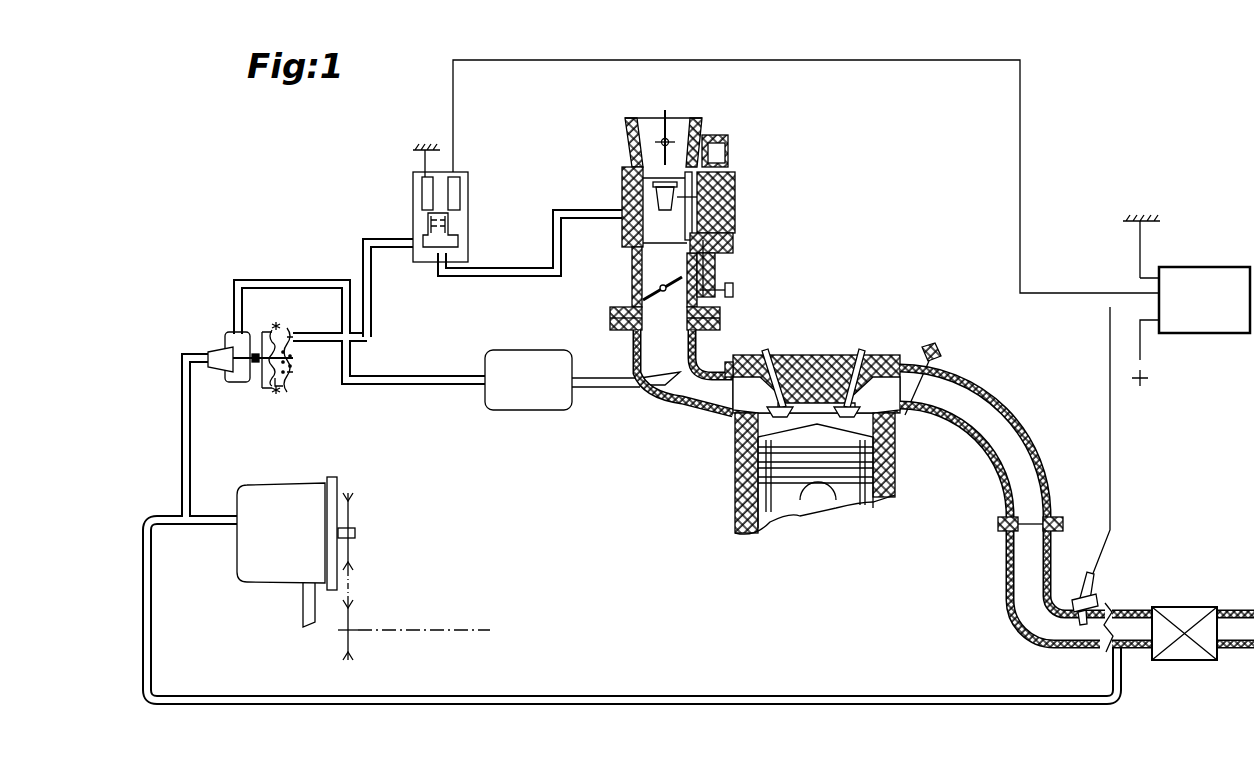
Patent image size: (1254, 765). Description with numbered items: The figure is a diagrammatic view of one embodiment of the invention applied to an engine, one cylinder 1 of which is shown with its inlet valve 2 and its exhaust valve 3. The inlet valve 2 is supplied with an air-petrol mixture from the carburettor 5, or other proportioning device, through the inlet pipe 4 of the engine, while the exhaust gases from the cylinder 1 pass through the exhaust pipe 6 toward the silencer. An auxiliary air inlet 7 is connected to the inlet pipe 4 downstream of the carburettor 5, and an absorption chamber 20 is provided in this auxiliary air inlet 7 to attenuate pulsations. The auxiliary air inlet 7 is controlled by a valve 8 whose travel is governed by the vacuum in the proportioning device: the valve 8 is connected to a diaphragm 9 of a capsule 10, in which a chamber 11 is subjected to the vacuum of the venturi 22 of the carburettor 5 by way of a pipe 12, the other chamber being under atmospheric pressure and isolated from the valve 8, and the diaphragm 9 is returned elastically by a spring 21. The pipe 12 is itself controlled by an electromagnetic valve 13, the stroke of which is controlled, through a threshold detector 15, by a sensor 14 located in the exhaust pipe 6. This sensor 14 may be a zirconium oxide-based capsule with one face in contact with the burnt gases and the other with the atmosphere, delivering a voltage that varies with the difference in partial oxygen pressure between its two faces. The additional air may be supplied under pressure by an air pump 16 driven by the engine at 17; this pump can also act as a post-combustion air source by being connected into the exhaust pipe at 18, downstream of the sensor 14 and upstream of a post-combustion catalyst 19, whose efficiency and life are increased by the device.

The cylinder 1 is at (897, 485).
The inlet valve 2 is at (770, 350).
The exhaust valve 3 is at (858, 350).
The inlet pipe 4 is at (687, 403).
The carburettor 5 is at (623, 262).
The exhaust pipe 6 is at (1015, 410).
The auxiliary air inlet 7 is at (607, 383).
The valve 8 is at (220, 350).
The diaphragm 9 is at (287, 380).
The capsule 10 is at (295, 367).
The chamber 11 is at (285, 387).
The pipe 12 is at (373, 307).
The electromagnetic valve 13 is at (470, 197).
The sensor 14 is at (1097, 592).
The threshold detector 15 is at (1227, 333).
The air pump 16 is at (277, 570).
The engine drive 17 is at (463, 630).
The exhaust pipe connection 18 is at (1137, 653).
The post-combustion catalyst 19 is at (1203, 607).
The absorption chamber 20 is at (527, 402).
The spring 21 is at (285, 343).
The venturi 22 is at (700, 205).